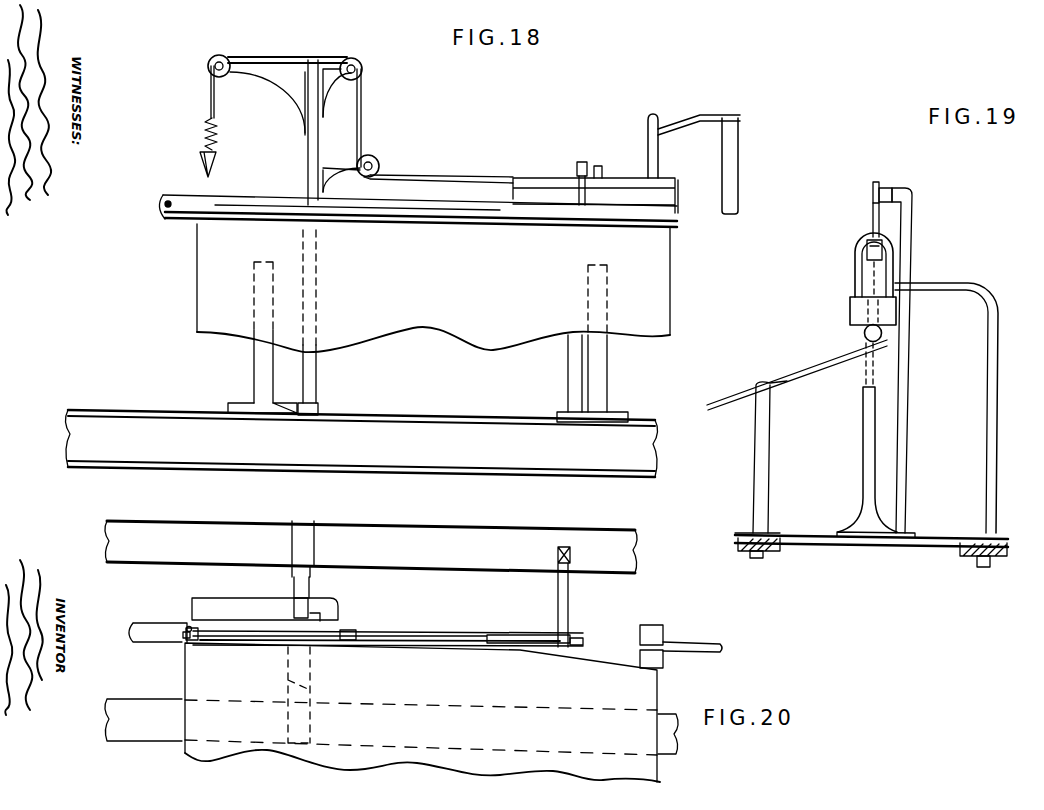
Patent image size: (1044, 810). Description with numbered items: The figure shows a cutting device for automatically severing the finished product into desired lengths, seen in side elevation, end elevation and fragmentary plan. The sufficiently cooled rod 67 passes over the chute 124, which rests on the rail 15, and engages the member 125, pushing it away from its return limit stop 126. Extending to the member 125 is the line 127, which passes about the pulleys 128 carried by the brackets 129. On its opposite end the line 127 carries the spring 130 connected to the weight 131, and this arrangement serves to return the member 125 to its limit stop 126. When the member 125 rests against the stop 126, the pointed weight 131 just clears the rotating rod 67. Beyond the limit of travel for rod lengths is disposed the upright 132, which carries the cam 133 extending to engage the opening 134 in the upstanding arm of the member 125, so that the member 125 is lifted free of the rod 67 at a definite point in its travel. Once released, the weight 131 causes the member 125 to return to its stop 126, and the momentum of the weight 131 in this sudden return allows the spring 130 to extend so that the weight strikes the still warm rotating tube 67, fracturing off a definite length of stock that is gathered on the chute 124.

In FIG. 18, the rail 15 is at (66, 452).
In FIG. 19, the rail 15 is at (765, 552).
In FIG. 20, the rail 15 is at (625, 552).
In FIG. 18, the rod 67 is at (163, 199).
In FIG. 19, the rod 67 is at (864, 333).
In FIG. 20, the rod 67 is at (507, 632).
In FIG. 18, the chute 124 is at (196, 245).
In FIG. 19, the chute 124 is at (803, 368).
In FIG. 20, the chute 124 is at (183, 678).
In FIG. 18, the member 125 is at (680, 207).
In FIG. 19, the member 125 is at (849, 305).
In FIG. 20, the member 125 is at (666, 630).
In FIG. 18, the return limit stop 126 is at (581, 160).
In FIG. 19, the return limit stop 126 is at (882, 278).
In FIG. 20, the return limit stop 126 is at (570, 622).
In FIG. 18, the line 127 is at (208, 94).
In FIG. 19, the line 127 is at (872, 216).
In FIG. 20, the line 127 is at (247, 633).
In FIG. 18, the pulleys 128 is at (209, 60).
In FIG. 19, the pulleys 128 is at (872, 190).
In FIG. 20, the pulleys 128 is at (357, 634).
In FIG. 18, the brackets 129 is at (280, 112).
In FIG. 19, the brackets 129 is at (910, 188).
In FIG. 20, the brackets 129 is at (250, 576).
In FIG. 18, the spring 130 is at (204, 136).
In FIG. 20, the spring 130 is at (186, 628).
In FIG. 18, the weight 131 is at (200, 171).
In FIG. 20, the weight 131 is at (182, 634).
In FIG. 18, the upright 132 is at (739, 186).
In FIG. 19, the upright 132 is at (864, 453).
In FIG. 18, the cam 133 is at (662, 130).
In FIG. 19, the cam 133 is at (884, 247).
In FIG. 20, the cam 133 is at (725, 648).
In FIG. 18, the opening 134 is at (649, 126).
In FIG. 19, the opening 134 is at (862, 258).
In FIG. 20, the opening 134 is at (666, 660).